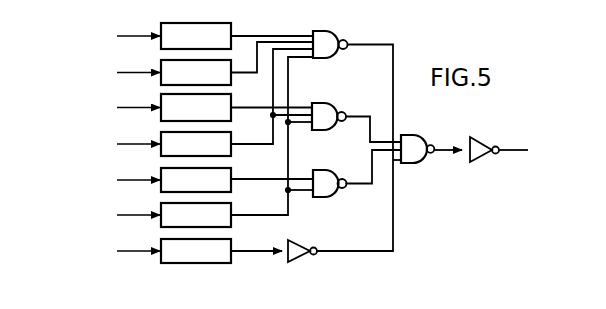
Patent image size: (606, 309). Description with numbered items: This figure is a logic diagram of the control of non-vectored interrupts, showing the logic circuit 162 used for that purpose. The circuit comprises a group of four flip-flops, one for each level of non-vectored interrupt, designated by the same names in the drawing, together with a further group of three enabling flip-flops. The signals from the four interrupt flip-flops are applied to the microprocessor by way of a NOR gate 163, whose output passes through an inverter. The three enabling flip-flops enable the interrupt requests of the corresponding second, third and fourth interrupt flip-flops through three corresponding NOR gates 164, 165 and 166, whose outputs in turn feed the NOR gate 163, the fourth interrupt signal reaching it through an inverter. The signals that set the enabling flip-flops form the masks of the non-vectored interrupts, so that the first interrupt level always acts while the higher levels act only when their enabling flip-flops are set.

The logic circuit 162 is at (134, 271).
The NOR gate 163 is at (413, 163).
The NOR gate 164 is at (327, 57).
The NOR gate 165 is at (325, 128).
The NOR gate 166 is at (327, 195).